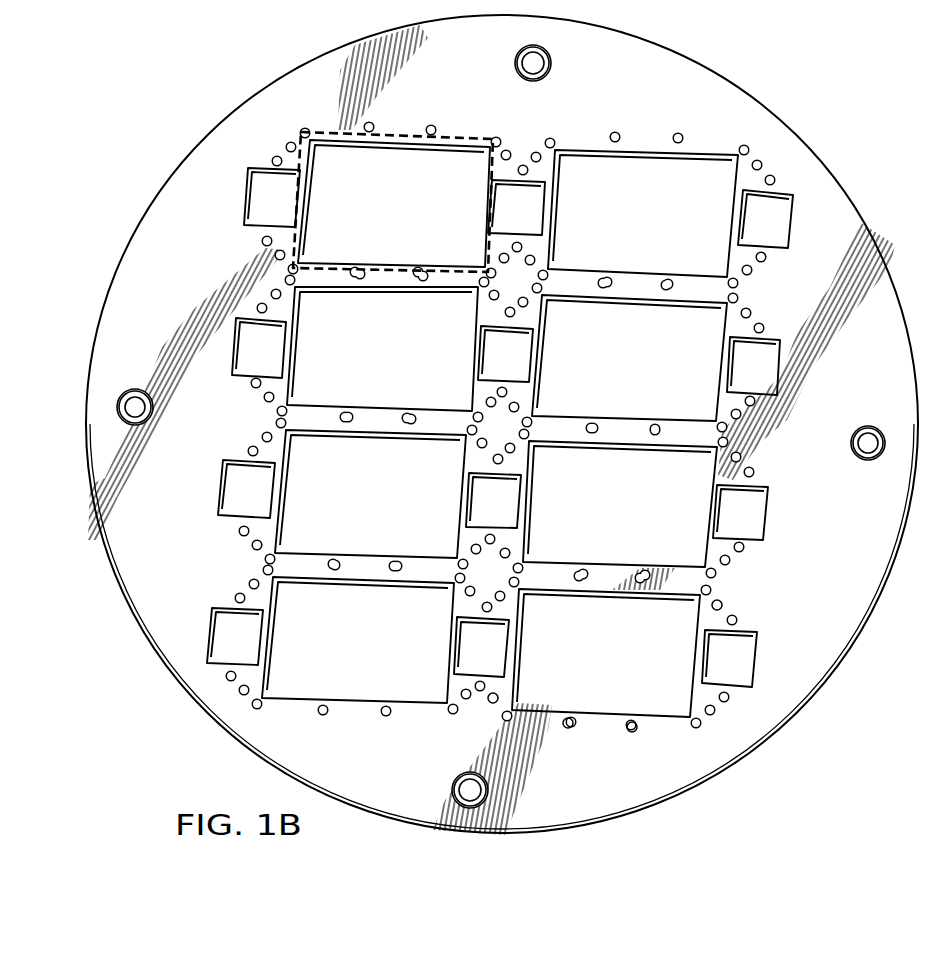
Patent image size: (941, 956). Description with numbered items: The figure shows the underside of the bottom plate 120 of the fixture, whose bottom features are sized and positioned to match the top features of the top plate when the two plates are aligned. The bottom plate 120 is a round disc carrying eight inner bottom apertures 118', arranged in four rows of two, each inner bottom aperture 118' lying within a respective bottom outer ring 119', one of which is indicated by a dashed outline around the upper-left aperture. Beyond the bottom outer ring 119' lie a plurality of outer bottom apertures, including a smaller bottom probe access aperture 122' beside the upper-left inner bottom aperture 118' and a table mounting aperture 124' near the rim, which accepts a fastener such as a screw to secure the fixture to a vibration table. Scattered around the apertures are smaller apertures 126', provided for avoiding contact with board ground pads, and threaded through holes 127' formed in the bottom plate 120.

The bottom plate 120 is at (165, 210).
The bottom probe access aperture 122' is at (243, 158).
The bottom outer ring 119' is at (393, 179).
The inner bottom aperture 118' is at (358, 668).
The table mounting aperture 124' is at (868, 417).
The apertures 126' is at (610, 674).
The threaded through holes 127' is at (597, 756).